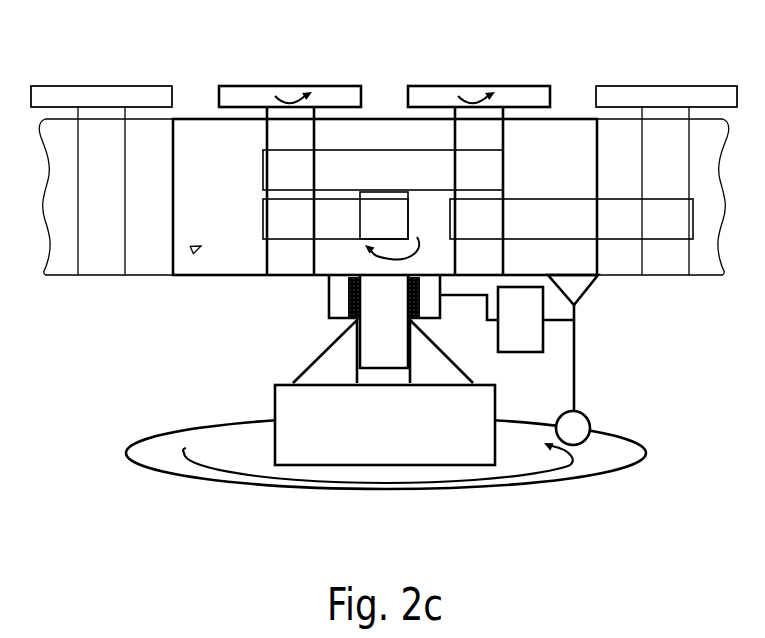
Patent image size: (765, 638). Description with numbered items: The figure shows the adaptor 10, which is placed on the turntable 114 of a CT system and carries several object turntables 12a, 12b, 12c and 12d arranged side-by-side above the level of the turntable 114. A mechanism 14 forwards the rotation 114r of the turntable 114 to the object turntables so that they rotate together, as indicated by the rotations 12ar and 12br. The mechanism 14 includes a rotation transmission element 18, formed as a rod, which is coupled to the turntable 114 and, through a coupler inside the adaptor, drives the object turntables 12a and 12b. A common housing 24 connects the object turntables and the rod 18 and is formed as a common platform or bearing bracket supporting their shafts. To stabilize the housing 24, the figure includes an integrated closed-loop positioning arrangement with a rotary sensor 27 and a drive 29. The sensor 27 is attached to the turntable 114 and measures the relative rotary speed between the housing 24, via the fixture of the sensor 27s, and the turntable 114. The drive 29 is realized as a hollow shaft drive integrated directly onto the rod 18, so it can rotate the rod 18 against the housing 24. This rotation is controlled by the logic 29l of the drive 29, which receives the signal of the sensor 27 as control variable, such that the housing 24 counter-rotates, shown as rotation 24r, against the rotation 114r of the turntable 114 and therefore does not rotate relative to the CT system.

The adaptor 10 is at (384, 183).
The object turntable 12a is at (257, 98).
The rotation of object turntable 12ar is at (293, 103).
The object turntable 12b is at (447, 98).
The rotation of object turntable 12br is at (475, 103).
The object turntable 12c is at (665, 97).
The object turntable 12d is at (95, 97).
The mechanism 14 is at (196, 248).
The rotation transmission element 18 is at (378, 338).
The common housing 24 is at (232, 264).
The rotation of housing 24r is at (390, 260).
The rotary sensor 27 is at (590, 417).
The fixture of the sensor 27s is at (575, 292).
The drive 29 is at (440, 310).
The logic 29l is at (540, 333).
The turntable 114 is at (573, 475).
The rotation of turntable 114r is at (425, 482).